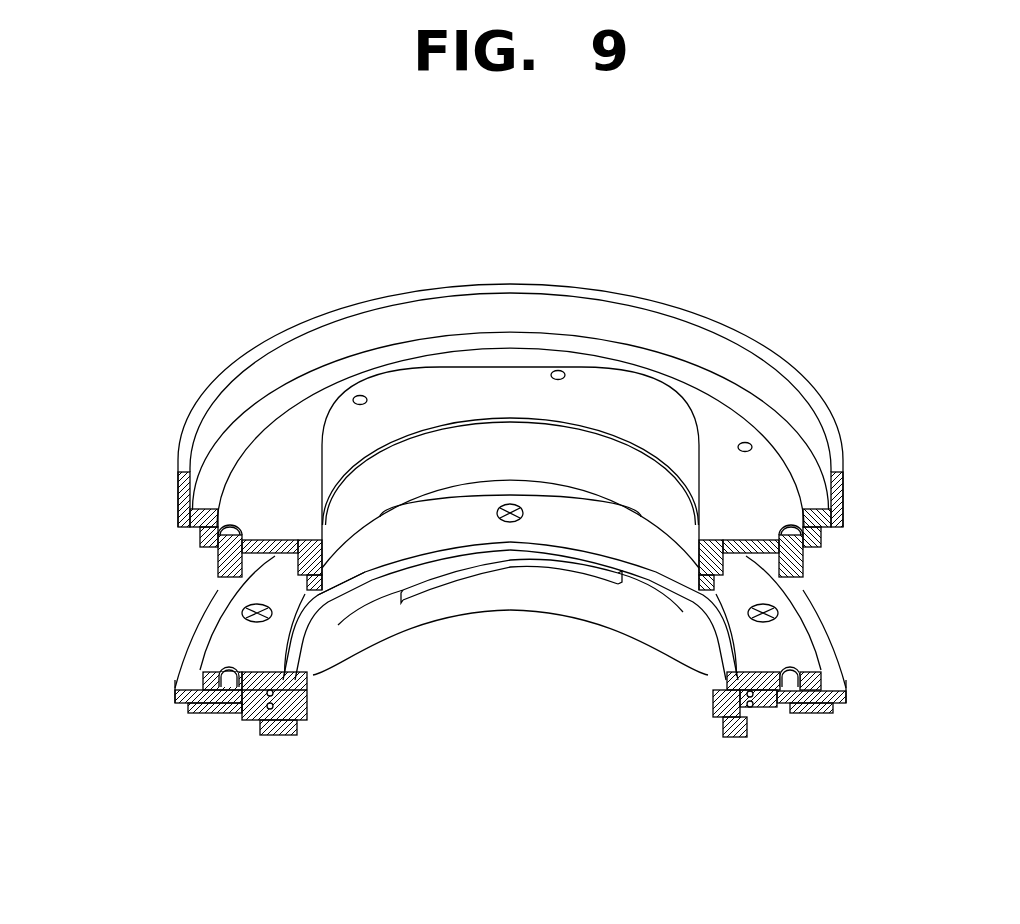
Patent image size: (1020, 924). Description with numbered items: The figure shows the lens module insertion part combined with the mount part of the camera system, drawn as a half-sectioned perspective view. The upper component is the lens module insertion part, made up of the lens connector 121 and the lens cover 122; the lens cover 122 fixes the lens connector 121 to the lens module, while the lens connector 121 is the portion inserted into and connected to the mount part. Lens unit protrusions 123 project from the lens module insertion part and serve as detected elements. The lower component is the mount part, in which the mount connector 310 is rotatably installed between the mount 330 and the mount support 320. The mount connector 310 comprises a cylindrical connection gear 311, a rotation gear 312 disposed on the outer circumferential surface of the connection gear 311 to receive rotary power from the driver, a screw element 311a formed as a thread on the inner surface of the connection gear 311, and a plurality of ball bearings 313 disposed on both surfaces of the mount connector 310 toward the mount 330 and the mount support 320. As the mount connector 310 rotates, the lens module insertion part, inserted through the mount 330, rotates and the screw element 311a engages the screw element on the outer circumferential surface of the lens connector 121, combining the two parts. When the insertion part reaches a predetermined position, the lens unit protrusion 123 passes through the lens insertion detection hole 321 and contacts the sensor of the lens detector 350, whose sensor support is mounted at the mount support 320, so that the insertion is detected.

The lens cover 122 is at (730, 337).
The lens connector 121 is at (758, 482).
The lens unit protrusion 123 is at (204, 542).
The mount support 320 is at (187, 673).
The mount 330 is at (223, 643).
The lens insertion detection hole 321 is at (789, 670).
The lens detector 350 is at (798, 708).
The mount connector 310 is at (377, 840).
The connection gear 311 is at (313, 710).
The screw element 311a is at (334, 630).
The rotation gear 312 is at (258, 735).
The bearings 313 is at (242, 705).